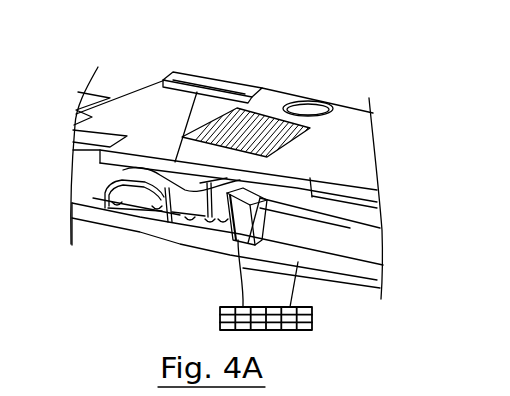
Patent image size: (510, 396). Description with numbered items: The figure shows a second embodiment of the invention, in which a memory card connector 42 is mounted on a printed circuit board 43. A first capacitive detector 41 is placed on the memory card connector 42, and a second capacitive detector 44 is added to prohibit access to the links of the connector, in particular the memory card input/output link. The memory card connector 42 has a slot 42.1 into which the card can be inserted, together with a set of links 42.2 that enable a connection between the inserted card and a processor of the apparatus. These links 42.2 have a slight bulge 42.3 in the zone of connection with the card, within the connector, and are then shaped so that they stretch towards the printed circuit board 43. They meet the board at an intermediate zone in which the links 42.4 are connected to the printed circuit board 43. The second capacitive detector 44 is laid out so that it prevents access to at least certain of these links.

The first capacitive detector 41 is at (260, 130).
The memory card connector 42 is at (150, 123).
The slot 42.1 is at (310, 177).
The links 42.2 is at (176, 197).
The slight bulge 42.3 is at (224, 170).
The links connected to the printed circuit board 42.4 is at (230, 243).
The printed circuit board 43 is at (85, 226).
The second capacitive detector 44 is at (313, 317).